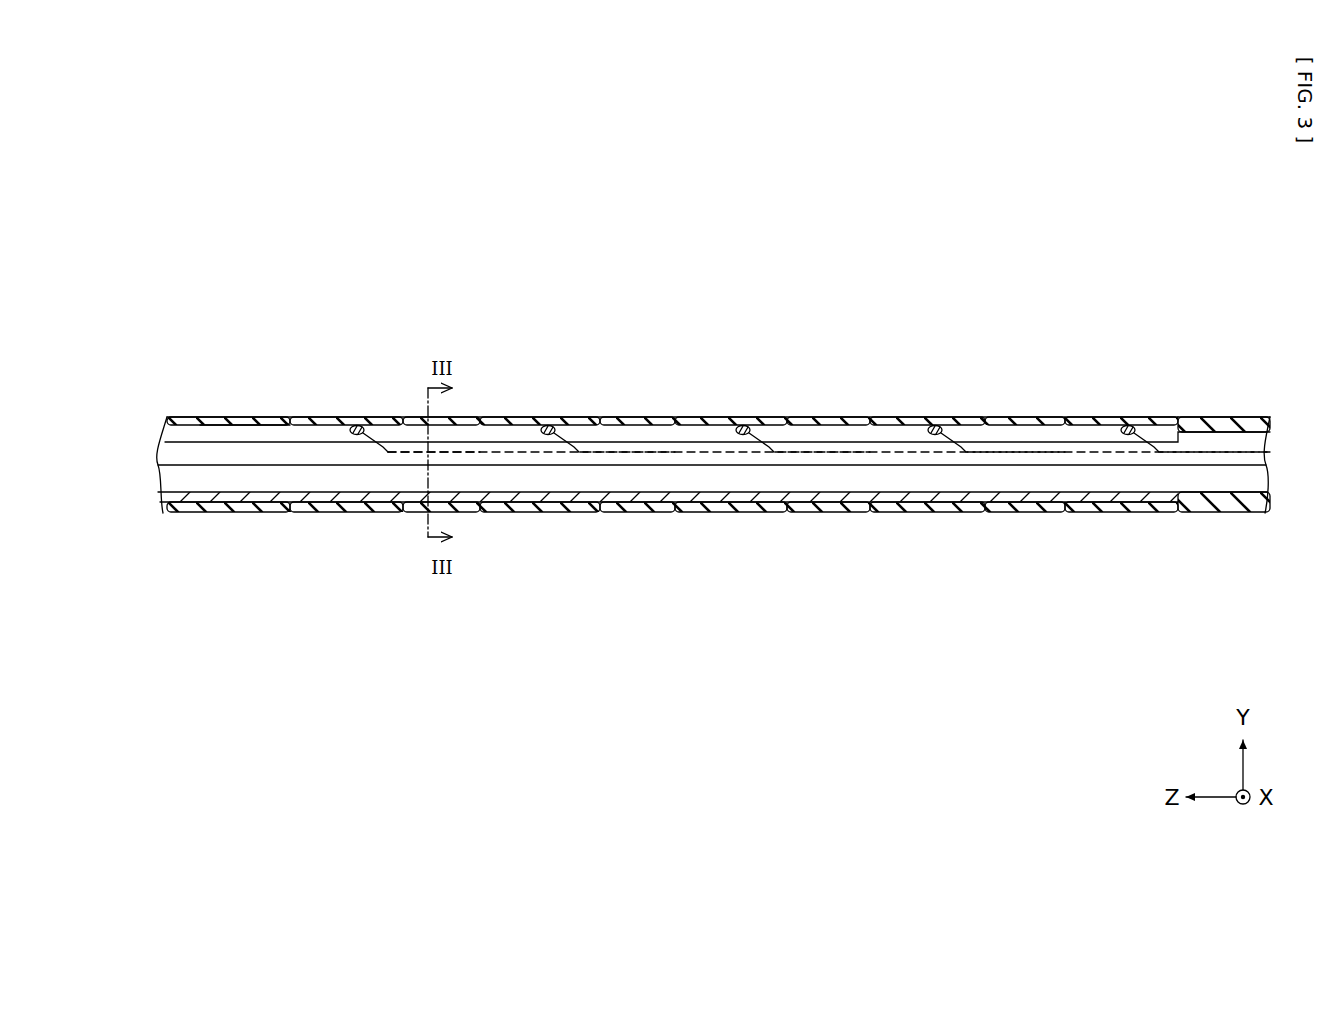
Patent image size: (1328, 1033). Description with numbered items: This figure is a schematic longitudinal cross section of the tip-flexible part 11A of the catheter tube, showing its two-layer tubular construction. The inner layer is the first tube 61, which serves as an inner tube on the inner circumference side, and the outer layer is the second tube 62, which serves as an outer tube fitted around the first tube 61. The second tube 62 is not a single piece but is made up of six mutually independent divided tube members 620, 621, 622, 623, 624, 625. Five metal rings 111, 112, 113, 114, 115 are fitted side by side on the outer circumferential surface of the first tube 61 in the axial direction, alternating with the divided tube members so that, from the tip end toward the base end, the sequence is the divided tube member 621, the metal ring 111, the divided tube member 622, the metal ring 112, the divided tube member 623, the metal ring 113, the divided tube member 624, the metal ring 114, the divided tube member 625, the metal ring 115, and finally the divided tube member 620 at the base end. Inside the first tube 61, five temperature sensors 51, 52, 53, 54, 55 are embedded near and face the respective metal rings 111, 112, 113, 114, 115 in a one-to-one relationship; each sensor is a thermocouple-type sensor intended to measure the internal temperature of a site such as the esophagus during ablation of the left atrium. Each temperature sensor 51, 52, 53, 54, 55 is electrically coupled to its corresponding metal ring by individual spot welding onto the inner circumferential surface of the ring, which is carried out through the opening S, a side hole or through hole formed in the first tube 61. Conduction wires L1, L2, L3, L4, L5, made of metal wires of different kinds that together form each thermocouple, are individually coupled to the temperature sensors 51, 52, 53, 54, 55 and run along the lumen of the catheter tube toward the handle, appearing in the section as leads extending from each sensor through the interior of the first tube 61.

The tip-flexible part 11A is at (1002, 261).
The first tube 61 is at (165, 426).
The second tube 62 is at (222, 660).
The divided tube member 620 is at (1190, 513).
The divided tube member 621 is at (240, 417).
The divided tube member 622 is at (463, 417).
The divided tube member 623 is at (640, 417).
The divided tube member 624 is at (840, 417).
The divided tube member 625 is at (1037, 417).
The metal ring 111 is at (360, 417).
The metal ring 112 is at (552, 417).
The metal ring 113 is at (747, 417).
The metal ring 114 is at (939, 417).
The metal ring 115 is at (1132, 417).
The temperature sensor 51 is at (349, 423).
The temperature sensor 52 is at (540, 423).
The temperature sensor 53 is at (735, 423).
The temperature sensor 54 is at (927, 423).
The temperature sensor 55 is at (1120, 423).
The opening S is at (190, 439).
The conduction wire L1 is at (387, 438).
The conduction wire L2 is at (583, 438).
The conduction wire L3 is at (777, 438).
The conduction wire L4 is at (970, 438).
The conduction wire L5 is at (1163, 438).